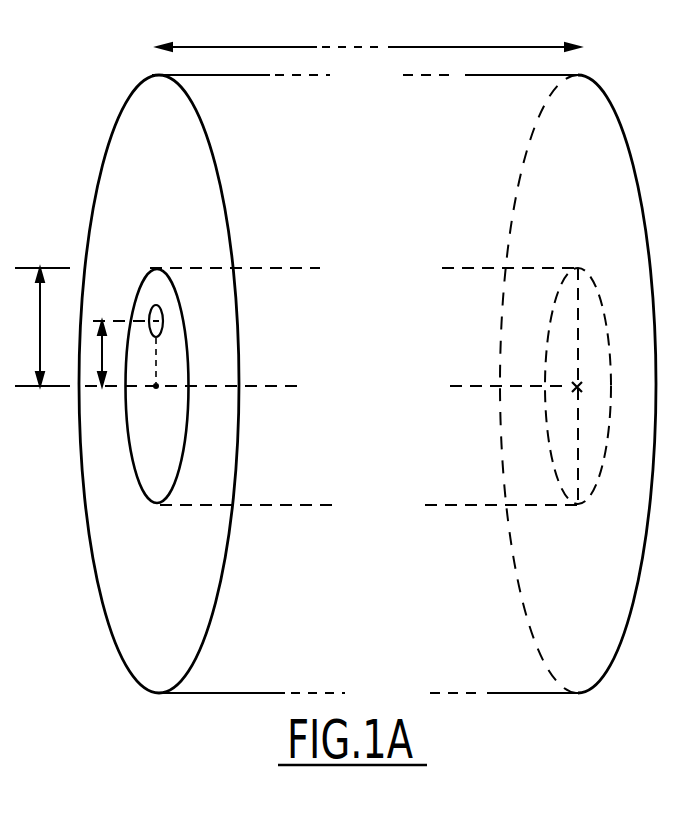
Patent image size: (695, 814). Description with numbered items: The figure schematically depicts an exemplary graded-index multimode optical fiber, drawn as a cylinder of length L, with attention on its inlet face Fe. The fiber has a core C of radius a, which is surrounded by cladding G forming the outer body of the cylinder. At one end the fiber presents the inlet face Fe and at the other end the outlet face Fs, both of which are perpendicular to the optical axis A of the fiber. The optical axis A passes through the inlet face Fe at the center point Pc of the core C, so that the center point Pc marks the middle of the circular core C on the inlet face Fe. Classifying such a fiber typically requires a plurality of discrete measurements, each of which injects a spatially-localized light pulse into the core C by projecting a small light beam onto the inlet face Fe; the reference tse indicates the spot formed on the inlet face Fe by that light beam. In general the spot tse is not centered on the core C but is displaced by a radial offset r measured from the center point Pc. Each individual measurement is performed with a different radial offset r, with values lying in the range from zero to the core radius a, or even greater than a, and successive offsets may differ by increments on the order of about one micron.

The inlet face Fe is at (133, 125).
The outlet face Fs is at (614, 100).
The length L is at (368, 34).
The spot tse is at (157, 305).
The radius of the core a is at (42, 327).
The radial offset r is at (118, 353).
The center point Pc is at (144, 414).
The optical axis A is at (211, 424).
The core C is at (146, 492).
The cladding G is at (128, 657).